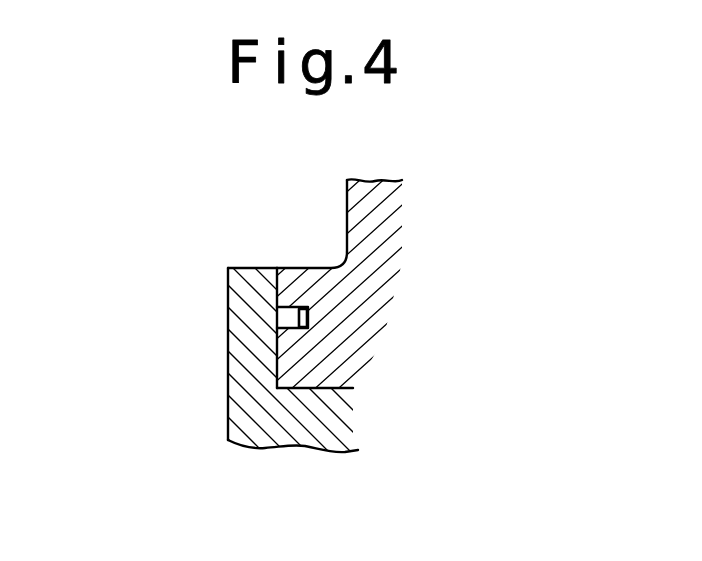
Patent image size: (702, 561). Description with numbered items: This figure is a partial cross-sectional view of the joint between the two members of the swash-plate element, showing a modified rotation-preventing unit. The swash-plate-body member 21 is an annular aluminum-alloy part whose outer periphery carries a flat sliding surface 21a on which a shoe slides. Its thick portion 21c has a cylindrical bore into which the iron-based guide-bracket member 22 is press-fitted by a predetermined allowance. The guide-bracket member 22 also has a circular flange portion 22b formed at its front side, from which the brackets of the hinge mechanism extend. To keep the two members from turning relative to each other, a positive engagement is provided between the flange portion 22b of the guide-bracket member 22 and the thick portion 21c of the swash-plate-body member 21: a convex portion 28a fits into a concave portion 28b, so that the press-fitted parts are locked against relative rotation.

The swash-plate-body member 21 is at (295, 303).
The sliding surface 21a is at (347, 208).
The thick portion 21c is at (353, 307).
The guide-bracket member 22 is at (237, 373).
The flange portion 22b is at (238, 268).
The convex portion 28a is at (282, 318).
The concave portion 28b is at (308, 321).